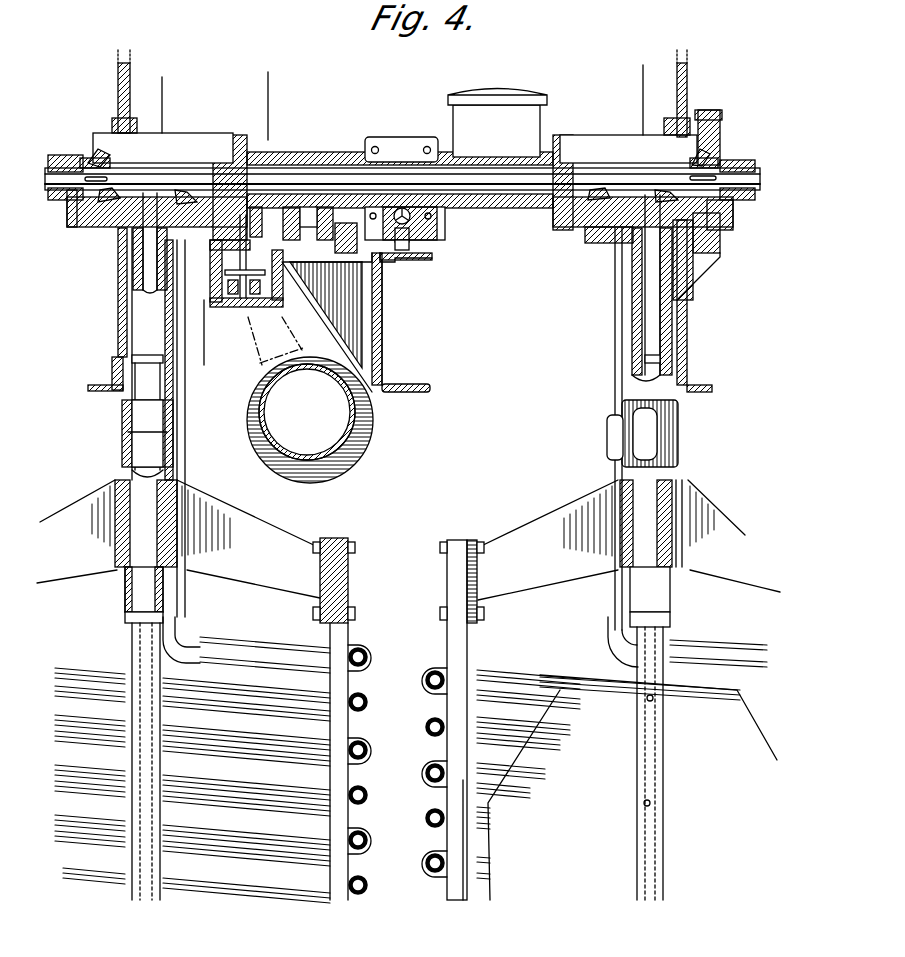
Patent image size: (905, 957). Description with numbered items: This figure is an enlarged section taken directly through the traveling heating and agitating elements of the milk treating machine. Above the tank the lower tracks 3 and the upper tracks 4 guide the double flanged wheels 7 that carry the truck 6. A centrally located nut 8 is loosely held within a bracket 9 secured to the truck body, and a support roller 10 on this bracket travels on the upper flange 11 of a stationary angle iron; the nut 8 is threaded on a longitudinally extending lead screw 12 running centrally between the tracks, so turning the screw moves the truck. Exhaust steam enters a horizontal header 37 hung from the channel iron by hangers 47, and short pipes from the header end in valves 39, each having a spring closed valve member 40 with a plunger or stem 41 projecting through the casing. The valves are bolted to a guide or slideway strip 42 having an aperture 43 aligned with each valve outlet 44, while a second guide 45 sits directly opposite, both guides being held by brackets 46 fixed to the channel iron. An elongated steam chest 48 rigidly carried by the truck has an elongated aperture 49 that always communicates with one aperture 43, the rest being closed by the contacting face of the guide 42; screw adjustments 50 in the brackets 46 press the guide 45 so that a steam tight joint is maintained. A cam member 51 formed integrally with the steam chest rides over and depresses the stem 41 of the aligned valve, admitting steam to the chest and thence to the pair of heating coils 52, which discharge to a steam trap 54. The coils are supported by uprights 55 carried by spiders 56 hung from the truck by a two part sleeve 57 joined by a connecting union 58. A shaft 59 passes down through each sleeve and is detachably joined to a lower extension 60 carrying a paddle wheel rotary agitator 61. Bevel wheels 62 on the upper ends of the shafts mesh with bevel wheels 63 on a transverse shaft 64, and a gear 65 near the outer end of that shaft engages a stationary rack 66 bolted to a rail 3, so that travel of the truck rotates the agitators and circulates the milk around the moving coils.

The tracks 3 is at (115, 332).
The upper tracks 4 is at (130, 95).
The truck 6 is at (260, 85).
The double flanged wheels 7 is at (115, 125).
The nut 8 is at (423, 236).
The bracket 9 is at (407, 150).
The support roller 10 is at (410, 263).
The upper flange 11 is at (430, 258).
The lead screw 12 is at (440, 224).
The header 37 is at (373, 448).
The valves 39 is at (207, 280).
The valve member 40 is at (290, 283).
The plunger or stem 41 is at (222, 272).
The guide or slideway strip 42 is at (307, 240).
The aperture 43 is at (313, 245).
The outlets 44 is at (285, 225).
The second strip or guide 45 is at (382, 305).
The brackets 46 is at (382, 345).
The hangers 47 is at (370, 462).
The steam chest 48 is at (345, 235).
The elongated aperture 49 is at (383, 397).
The screw adjustments 50 is at (388, 273).
The cam member 51 is at (258, 207).
The heating coils 52 is at (435, 873).
The steam trap 54 is at (520, 88).
The uprights 55 is at (464, 631).
The spiders 56 is at (277, 567).
The two part sleeve 57 is at (120, 397).
The connecting union 58 is at (118, 440).
The shaft 59 is at (143, 362).
The lower extension 60 is at (133, 470).
The rotary agitator 61 is at (141, 679).
The bevel wheels 62 is at (200, 200).
The bevel wheels 63 is at (85, 157).
The transverse shaft 64 is at (141, 180).
The gear 65 is at (713, 110).
The stationary rack 66 is at (723, 257).